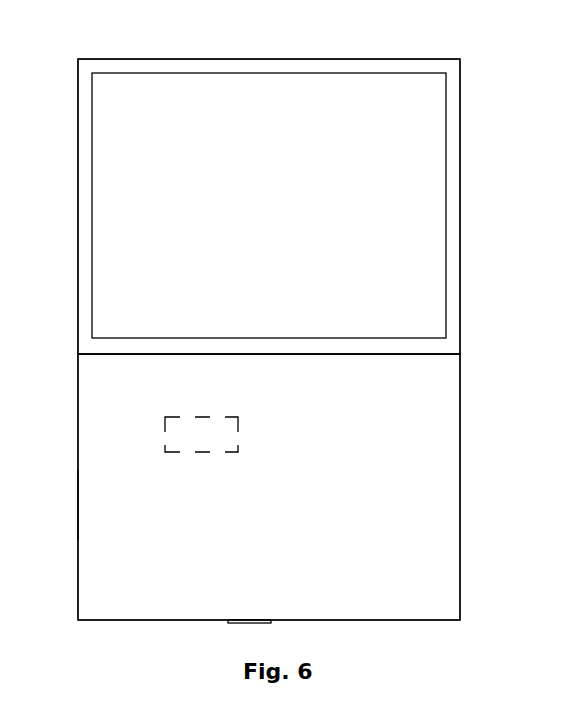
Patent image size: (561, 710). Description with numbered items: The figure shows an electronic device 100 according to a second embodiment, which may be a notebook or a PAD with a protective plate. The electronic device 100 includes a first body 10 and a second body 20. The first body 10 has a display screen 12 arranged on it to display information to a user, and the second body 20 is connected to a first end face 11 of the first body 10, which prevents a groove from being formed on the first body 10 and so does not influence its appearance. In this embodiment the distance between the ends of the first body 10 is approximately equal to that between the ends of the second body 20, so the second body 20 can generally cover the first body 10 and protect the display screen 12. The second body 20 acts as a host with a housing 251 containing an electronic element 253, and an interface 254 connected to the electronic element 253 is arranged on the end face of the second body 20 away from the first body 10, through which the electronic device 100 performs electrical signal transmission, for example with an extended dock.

The electronic device 100 is at (277, 30).
The first body 10 is at (452, 163).
The display screen 12 is at (387, 283).
The first end face 11 is at (402, 352).
The second body 20 is at (390, 410).
The electronic element 253 is at (208, 433).
The housing 251 is at (150, 521).
The interface 254 is at (247, 620).